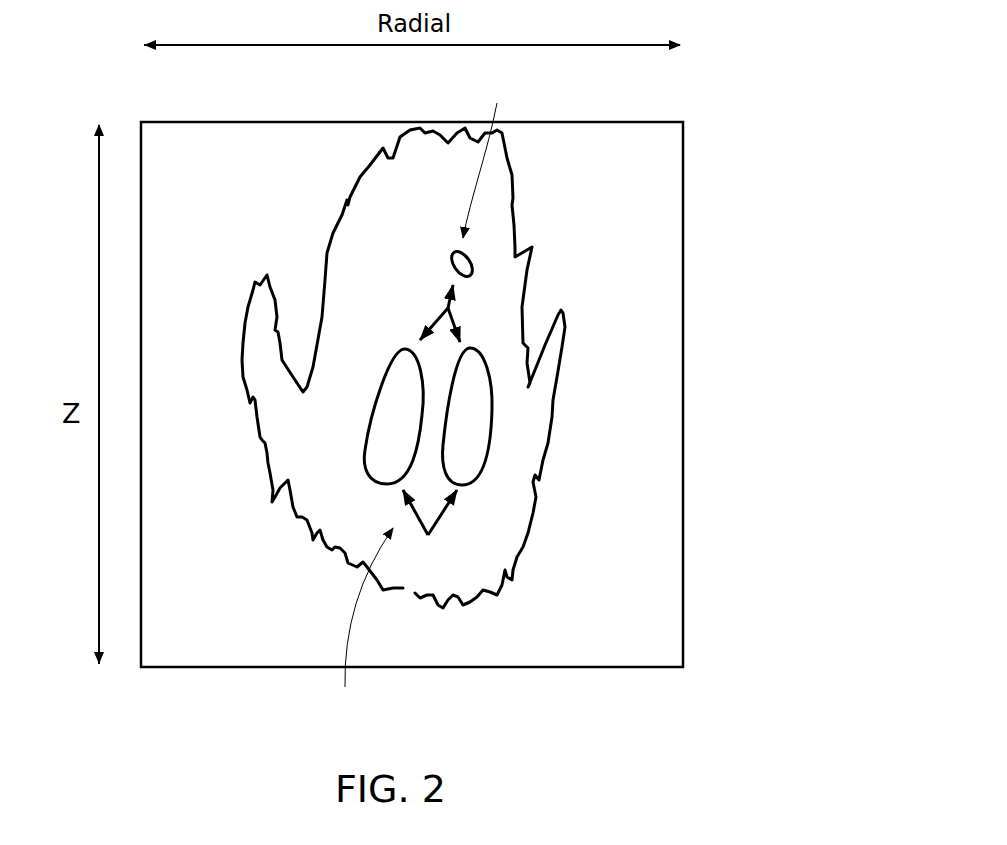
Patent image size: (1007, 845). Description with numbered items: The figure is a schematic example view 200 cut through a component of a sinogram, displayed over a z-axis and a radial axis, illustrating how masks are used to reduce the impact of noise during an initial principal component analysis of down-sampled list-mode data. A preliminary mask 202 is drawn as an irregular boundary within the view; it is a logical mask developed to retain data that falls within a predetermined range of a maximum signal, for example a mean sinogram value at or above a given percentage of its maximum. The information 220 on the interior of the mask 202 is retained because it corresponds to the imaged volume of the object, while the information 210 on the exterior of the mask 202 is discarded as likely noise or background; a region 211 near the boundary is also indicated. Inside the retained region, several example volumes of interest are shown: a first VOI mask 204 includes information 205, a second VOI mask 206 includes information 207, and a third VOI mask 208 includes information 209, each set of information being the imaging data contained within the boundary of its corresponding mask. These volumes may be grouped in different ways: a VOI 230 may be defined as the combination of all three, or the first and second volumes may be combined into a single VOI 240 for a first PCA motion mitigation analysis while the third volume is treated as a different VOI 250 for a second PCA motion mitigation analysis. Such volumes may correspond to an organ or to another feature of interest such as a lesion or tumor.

The example view 200 is at (735, 122).
The preliminary mask 202 is at (245, 315).
The first VOI mask 204 is at (492, 435).
The information 205 is at (475, 417).
The second VOI mask 206 is at (372, 445).
The information 207 is at (387, 415).
The third VOI mask 208 is at (473, 255).
The information 209 is at (452, 258).
The information on the exterior of the mask 210 is at (615, 282).
The grain interior region 211 is at (480, 545).
The information on the interior of the mask 220 is at (361, 622).
The VOI 230 is at (448, 308).
The single VOI 240 is at (428, 535).
The different VOI 250 is at (492, 157).